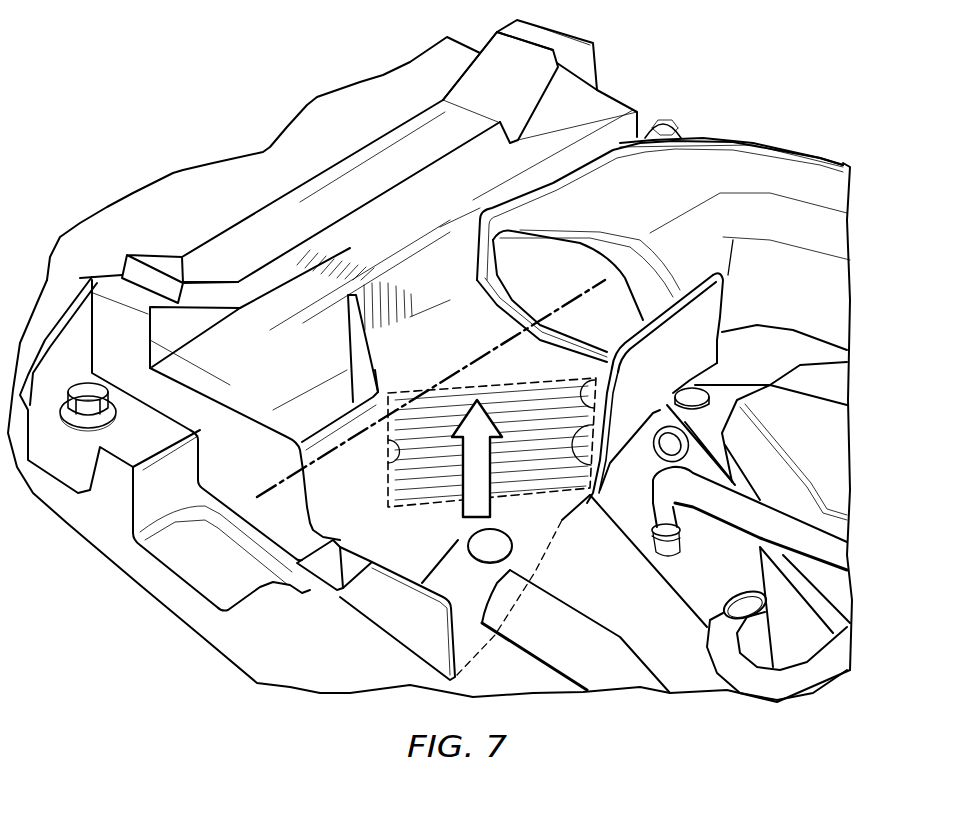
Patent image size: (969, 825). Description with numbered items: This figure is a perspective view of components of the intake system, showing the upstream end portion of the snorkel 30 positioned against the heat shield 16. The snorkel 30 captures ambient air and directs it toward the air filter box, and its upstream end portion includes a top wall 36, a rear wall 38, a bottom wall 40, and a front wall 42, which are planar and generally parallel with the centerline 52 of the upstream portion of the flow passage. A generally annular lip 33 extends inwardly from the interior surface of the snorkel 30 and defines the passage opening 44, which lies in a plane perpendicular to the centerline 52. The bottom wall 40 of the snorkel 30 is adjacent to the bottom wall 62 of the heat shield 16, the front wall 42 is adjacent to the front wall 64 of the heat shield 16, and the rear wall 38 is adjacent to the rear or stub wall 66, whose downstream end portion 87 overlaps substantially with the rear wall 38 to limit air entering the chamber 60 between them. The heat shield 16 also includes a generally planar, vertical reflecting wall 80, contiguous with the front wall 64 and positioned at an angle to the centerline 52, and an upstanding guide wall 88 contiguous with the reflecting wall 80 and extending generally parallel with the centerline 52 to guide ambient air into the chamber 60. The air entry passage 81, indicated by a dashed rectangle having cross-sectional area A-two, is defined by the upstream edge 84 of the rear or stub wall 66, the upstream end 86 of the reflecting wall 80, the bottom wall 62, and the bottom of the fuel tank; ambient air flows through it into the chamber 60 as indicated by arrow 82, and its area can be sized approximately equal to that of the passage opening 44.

The heat shield 16 is at (617, 97).
The snorkel 30 is at (743, 137).
The generally annular lip 33 is at (607, 257).
The top wall 36 is at (626, 189).
The rear wall 38 is at (707, 267).
The bottom wall 40 is at (620, 393).
The front wall 42 is at (482, 257).
The passage opening 44 is at (570, 267).
The centerline 52 is at (265, 493).
The chamber 60 is at (397, 291).
The bottom wall 62 is at (525, 372).
The front wall 64 is at (420, 272).
The rear or stub wall 66 is at (693, 345).
The reflecting wall 80 is at (380, 372).
The air entry passage 81 is at (490, 525).
The arrow 82 is at (457, 505).
The upstream edge 84 is at (614, 470).
The upstream end 86 is at (386, 462).
The downstream end portion 87 is at (717, 291).
The guide wall 88 is at (358, 508).